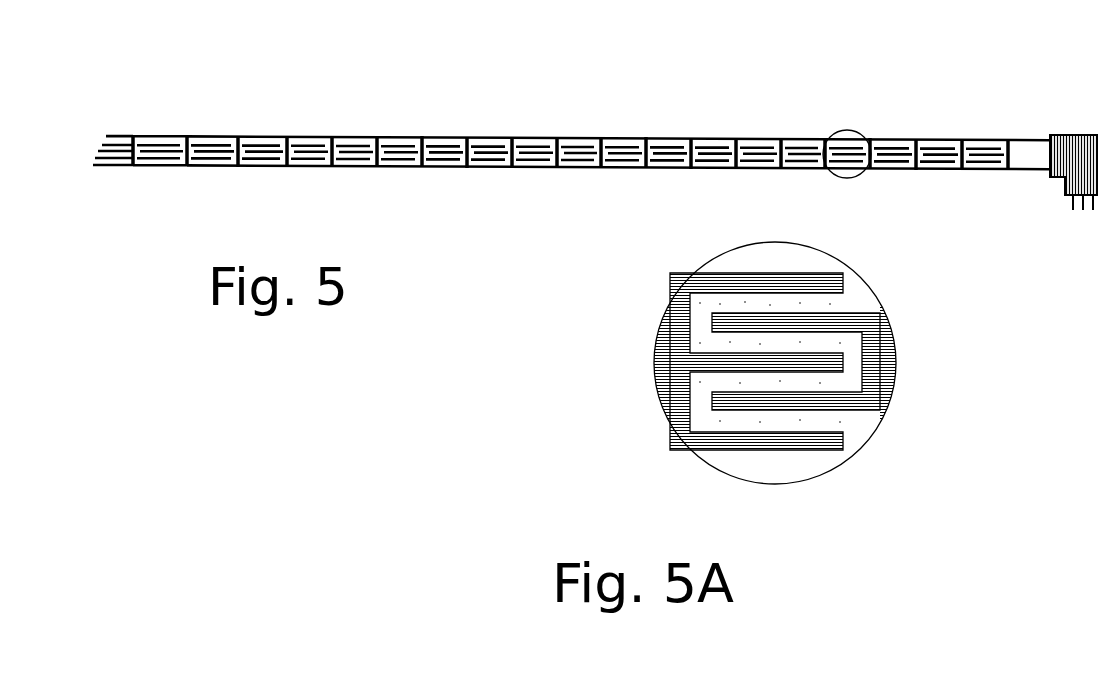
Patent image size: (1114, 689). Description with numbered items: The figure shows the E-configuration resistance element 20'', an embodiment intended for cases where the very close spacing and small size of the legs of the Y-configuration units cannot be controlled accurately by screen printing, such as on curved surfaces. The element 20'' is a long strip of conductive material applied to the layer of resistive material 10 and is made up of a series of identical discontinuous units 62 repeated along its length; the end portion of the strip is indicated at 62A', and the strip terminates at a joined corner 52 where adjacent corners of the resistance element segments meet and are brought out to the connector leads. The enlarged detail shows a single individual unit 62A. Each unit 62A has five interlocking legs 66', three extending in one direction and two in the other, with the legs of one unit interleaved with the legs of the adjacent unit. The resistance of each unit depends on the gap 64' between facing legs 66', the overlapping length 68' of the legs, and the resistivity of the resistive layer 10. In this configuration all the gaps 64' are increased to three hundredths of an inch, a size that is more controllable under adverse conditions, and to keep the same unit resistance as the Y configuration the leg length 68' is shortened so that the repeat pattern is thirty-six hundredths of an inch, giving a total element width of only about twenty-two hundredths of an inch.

In FIG. 5, the resistance element 20'' is at (595, 135).
In FIG. 5, the discontinuous unit 62 is at (862, 133).
In FIG. 5, the electrode pattern segment 62A' is at (140, 183).
In FIG. 5, the joined corners 52 is at (1052, 178).
In FIG. 5A, the individual unit 62A is at (780, 366).
In FIG. 5A, the gap 64' is at (751, 335).
In FIG. 5A, the interlocking legs 66' is at (756, 382).
In FIG. 5A, the length of the legs 68' is at (722, 362).
In FIG. 5A, the resistive layer 10 is at (812, 465).